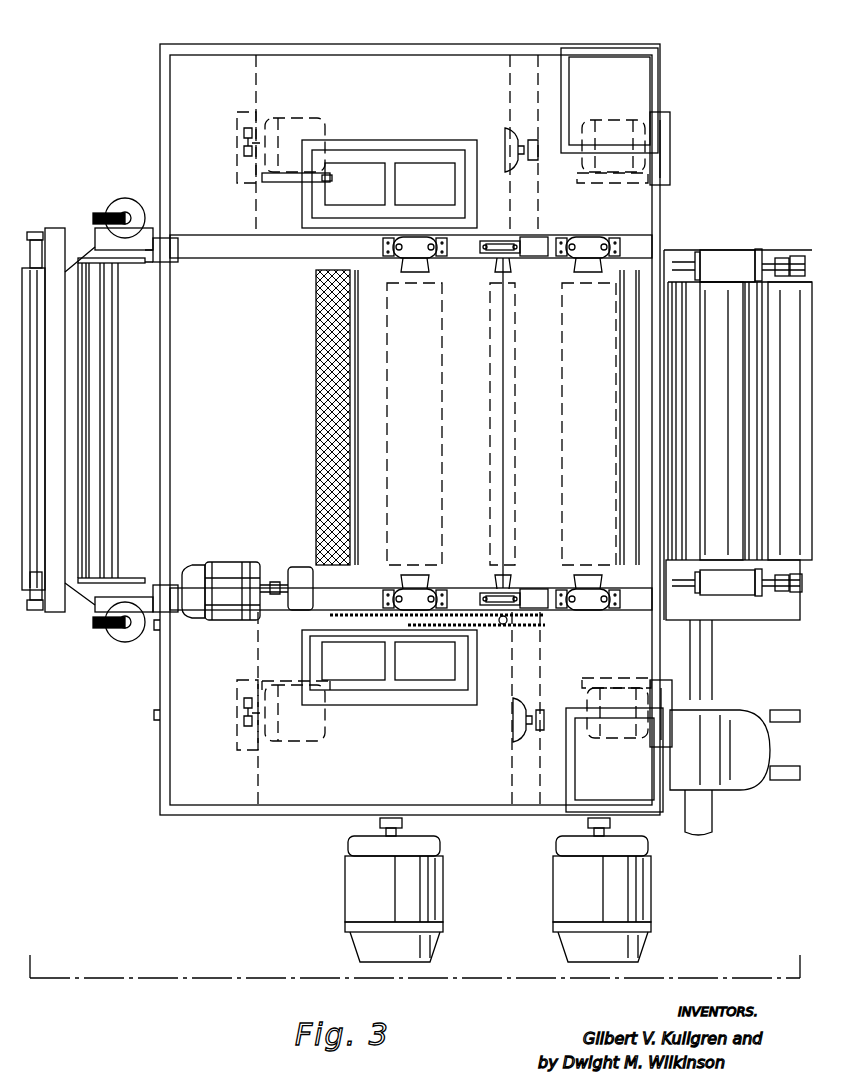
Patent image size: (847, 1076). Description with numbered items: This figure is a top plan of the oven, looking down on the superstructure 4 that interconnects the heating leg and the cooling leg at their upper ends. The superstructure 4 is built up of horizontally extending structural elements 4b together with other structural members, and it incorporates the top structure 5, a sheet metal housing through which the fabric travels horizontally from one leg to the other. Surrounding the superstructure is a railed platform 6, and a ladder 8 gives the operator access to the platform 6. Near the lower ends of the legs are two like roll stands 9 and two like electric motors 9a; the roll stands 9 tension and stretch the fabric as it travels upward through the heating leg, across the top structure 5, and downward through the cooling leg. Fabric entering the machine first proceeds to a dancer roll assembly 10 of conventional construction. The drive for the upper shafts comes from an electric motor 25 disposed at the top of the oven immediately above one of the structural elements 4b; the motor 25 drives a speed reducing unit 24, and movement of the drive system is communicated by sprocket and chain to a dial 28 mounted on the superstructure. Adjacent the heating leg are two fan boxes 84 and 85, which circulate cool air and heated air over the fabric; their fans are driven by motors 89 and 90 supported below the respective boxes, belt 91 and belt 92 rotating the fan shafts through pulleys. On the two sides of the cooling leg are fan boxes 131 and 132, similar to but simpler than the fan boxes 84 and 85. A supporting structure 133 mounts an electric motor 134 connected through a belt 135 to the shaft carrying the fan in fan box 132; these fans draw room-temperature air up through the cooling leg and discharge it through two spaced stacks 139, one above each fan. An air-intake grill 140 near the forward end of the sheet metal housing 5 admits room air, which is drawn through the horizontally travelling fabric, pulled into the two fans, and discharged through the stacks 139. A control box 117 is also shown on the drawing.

The superstructure 4 is at (414, 982).
The horizontally extending structural element 4b is at (240, 238).
The top structure 5 is at (352, 393).
The railed platform 6 is at (160, 78).
The ladder 8 is at (160, 737).
The roll stand 9 is at (736, 250).
The electric motor 9a is at (344, 905).
The dancer roll assembly 10 is at (92, 211).
The speed reducing unit 24 is at (297, 567).
The electric motor 25 is at (215, 562).
The dial 28 is at (532, 628).
The fan box 84 is at (267, 72).
The fan box 85 is at (276, 800).
The motor 89 is at (320, 118).
The motor 90 is at (325, 742).
The belt 91 is at (237, 748).
The belt 92 is at (237, 176).
The control box 117 is at (388, 153).
The fan box 131 is at (556, 56).
The fan box 132 is at (551, 806).
The supporting structure 133 is at (610, 184).
The electric motor 134 is at (610, 118).
The belt 135 is at (672, 136).
The stack 139 is at (581, 96).
The air-intake grill 140 is at (316, 343).